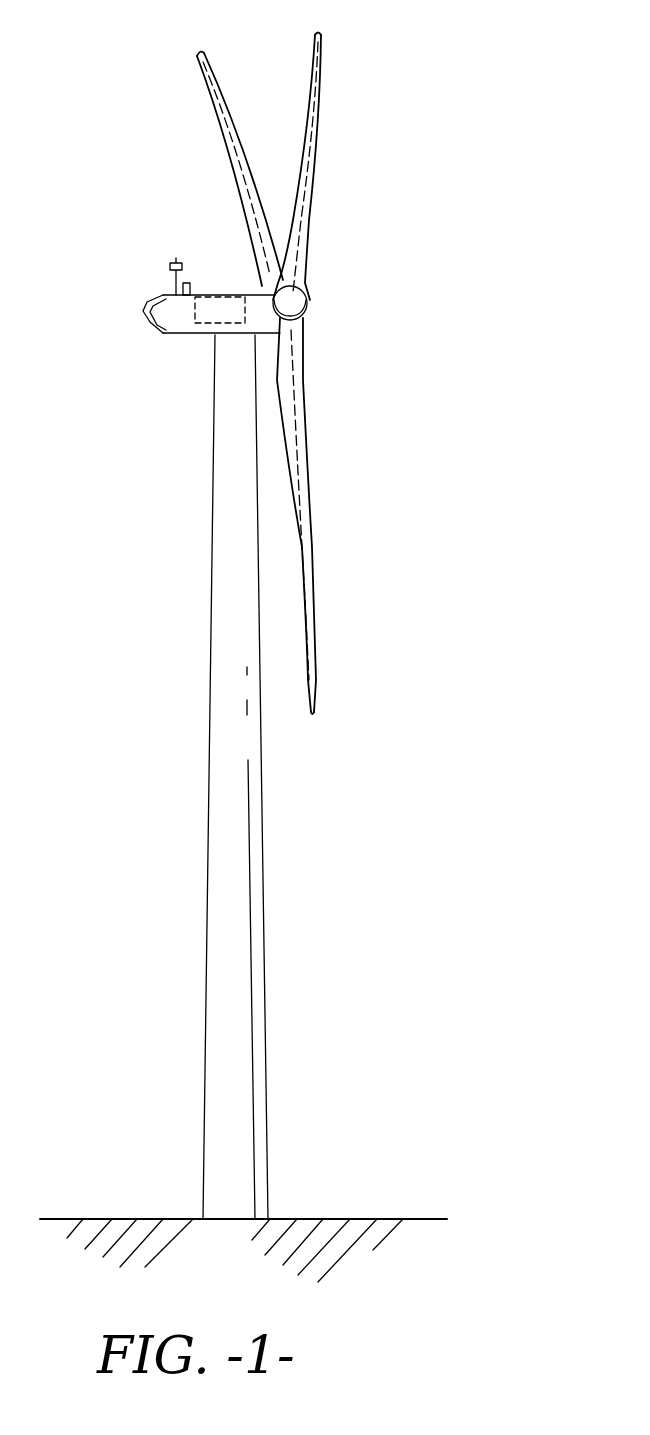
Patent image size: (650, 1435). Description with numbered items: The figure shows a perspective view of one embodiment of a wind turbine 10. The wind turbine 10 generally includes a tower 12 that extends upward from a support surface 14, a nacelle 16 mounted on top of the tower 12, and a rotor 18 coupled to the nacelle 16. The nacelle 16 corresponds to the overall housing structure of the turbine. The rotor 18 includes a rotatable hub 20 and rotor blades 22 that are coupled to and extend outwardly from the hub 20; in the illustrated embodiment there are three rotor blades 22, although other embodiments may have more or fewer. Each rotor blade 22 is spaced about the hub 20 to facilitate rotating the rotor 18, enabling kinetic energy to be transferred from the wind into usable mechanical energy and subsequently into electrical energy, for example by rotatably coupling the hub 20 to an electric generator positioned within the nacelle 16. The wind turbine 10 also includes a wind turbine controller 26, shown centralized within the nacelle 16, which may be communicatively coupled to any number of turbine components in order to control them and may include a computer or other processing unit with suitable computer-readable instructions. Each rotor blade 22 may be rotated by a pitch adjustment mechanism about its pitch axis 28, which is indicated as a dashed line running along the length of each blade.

The wind turbine 10 is at (445, 110).
The tower 12 is at (220, 897).
The support surface 14 is at (127, 1219).
The nacelle 16 is at (190, 335).
The rotor 18 is at (324, 285).
The rotatable hub 20 is at (310, 317).
The rotor blade 22 is at (308, 77).
The wind turbine controller 26 is at (222, 297).
The pitch axis 28 is at (240, 213).